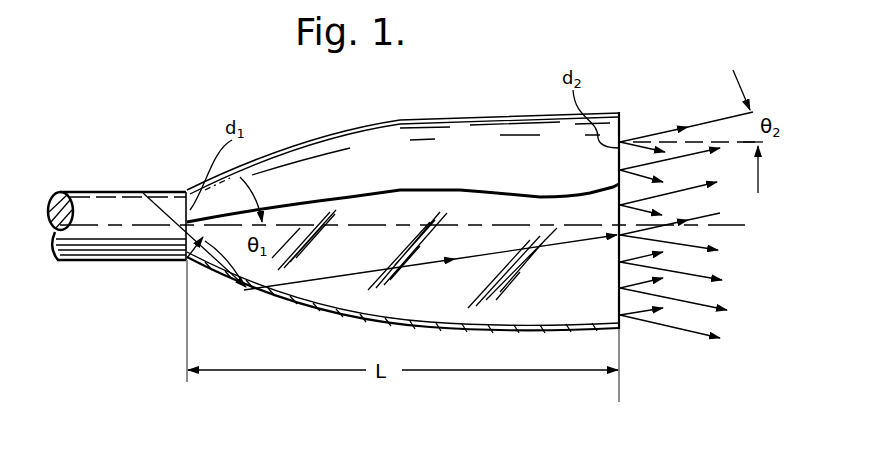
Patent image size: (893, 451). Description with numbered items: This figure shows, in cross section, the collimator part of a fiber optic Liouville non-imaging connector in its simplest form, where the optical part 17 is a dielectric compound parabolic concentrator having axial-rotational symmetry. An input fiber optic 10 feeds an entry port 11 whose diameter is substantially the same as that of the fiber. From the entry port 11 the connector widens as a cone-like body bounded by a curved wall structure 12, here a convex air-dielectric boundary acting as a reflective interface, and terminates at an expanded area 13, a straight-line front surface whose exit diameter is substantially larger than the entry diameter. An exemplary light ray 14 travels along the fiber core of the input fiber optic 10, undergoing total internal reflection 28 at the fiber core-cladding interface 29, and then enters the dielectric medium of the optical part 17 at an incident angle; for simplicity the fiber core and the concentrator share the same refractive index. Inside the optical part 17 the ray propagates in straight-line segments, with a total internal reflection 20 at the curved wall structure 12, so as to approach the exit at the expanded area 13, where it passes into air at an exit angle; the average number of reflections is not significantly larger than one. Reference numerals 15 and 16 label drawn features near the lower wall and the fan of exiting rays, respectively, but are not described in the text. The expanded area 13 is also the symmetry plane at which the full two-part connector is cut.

The input fiber optic 10 is at (102, 198).
The entry port 11 is at (185, 261).
The curved wall structure 12 is at (417, 120).
The expanded area 13 is at (623, 127).
The light ray 14 is at (140, 200).
The tapered waveguide lower wall 15 is at (357, 275).
The output light rays 16 is at (675, 300).
The optical part 17 is at (525, 302).
The total internal reflection 20 is at (268, 272).
The total internal reflection 28 is at (143, 196).
The fiber core-cladding interface 29 is at (130, 270).